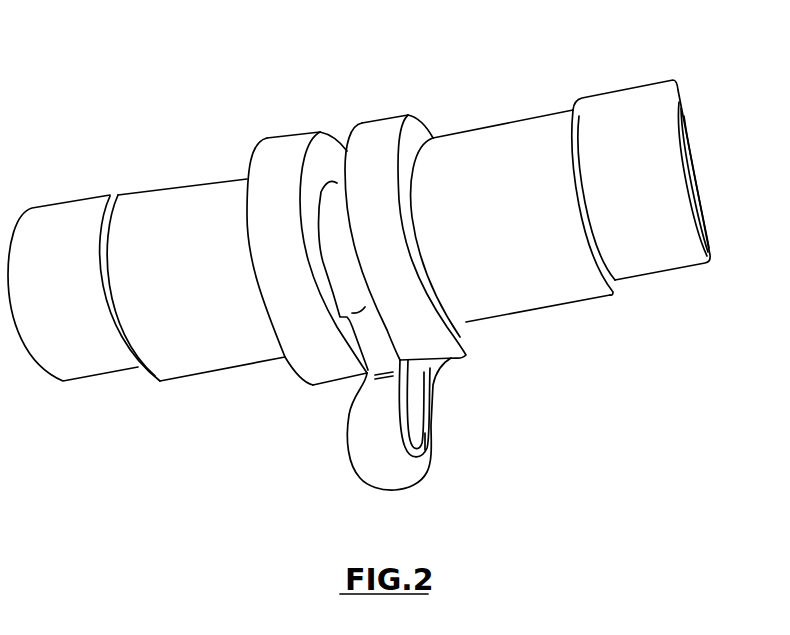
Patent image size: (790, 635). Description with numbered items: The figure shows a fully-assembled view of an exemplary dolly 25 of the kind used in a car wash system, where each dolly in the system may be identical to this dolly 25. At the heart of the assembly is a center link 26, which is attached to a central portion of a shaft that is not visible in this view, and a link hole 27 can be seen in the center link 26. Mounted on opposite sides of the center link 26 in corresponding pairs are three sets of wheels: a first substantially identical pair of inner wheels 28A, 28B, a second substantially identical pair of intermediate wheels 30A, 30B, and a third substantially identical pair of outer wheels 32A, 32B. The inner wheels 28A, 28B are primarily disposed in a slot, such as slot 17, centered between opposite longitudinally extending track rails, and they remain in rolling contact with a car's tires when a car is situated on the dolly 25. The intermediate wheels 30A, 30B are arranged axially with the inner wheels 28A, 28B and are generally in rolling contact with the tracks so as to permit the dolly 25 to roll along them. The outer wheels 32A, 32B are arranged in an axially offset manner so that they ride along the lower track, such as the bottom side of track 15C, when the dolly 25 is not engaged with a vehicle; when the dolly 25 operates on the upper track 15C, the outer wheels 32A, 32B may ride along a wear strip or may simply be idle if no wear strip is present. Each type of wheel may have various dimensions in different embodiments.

The dolly 25 is at (647, 397).
The center link 26 is at (377, 450).
The link hole 27 is at (337, 181).
The inner wheel 28A is at (282, 157).
The inner wheel 28B is at (377, 123).
The intermediate wheel 30A is at (186, 199).
The intermediate wheel 30B is at (488, 138).
The outer wheel 32A is at (67, 213).
The outer wheel 32B is at (633, 105).
The track 15C is at (100, 19).
The slot 17 is at (133, 0).